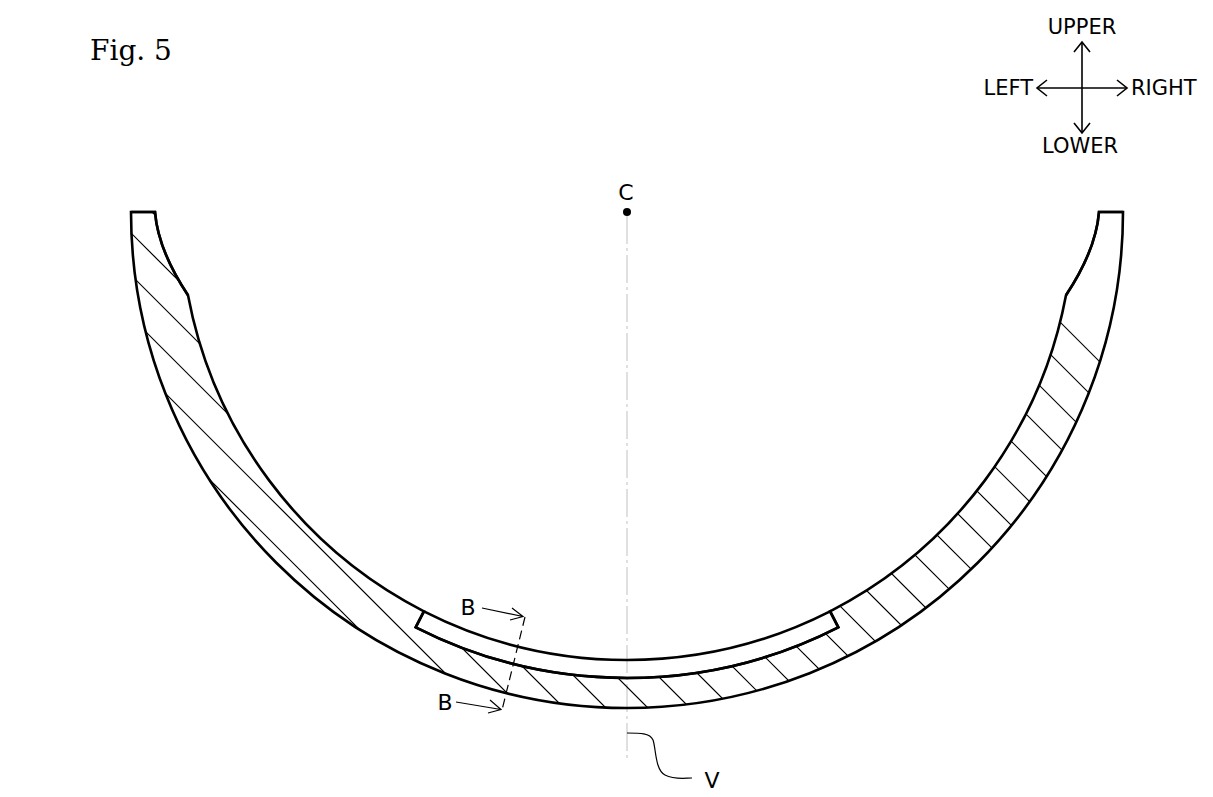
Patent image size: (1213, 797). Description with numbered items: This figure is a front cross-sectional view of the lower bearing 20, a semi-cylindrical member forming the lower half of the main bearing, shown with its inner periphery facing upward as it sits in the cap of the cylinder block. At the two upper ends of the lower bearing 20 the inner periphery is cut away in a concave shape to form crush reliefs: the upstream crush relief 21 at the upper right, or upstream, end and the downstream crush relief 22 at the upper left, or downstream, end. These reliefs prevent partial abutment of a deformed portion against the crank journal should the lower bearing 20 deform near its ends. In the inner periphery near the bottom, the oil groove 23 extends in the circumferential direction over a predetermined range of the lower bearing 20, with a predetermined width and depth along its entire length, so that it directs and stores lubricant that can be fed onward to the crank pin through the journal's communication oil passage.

The lower bearing 20 is at (282, 598).
The upstream crush relief 21 is at (1089, 248).
The downstream crush relief 22 is at (163, 248).
The oil groove 23 is at (747, 660).